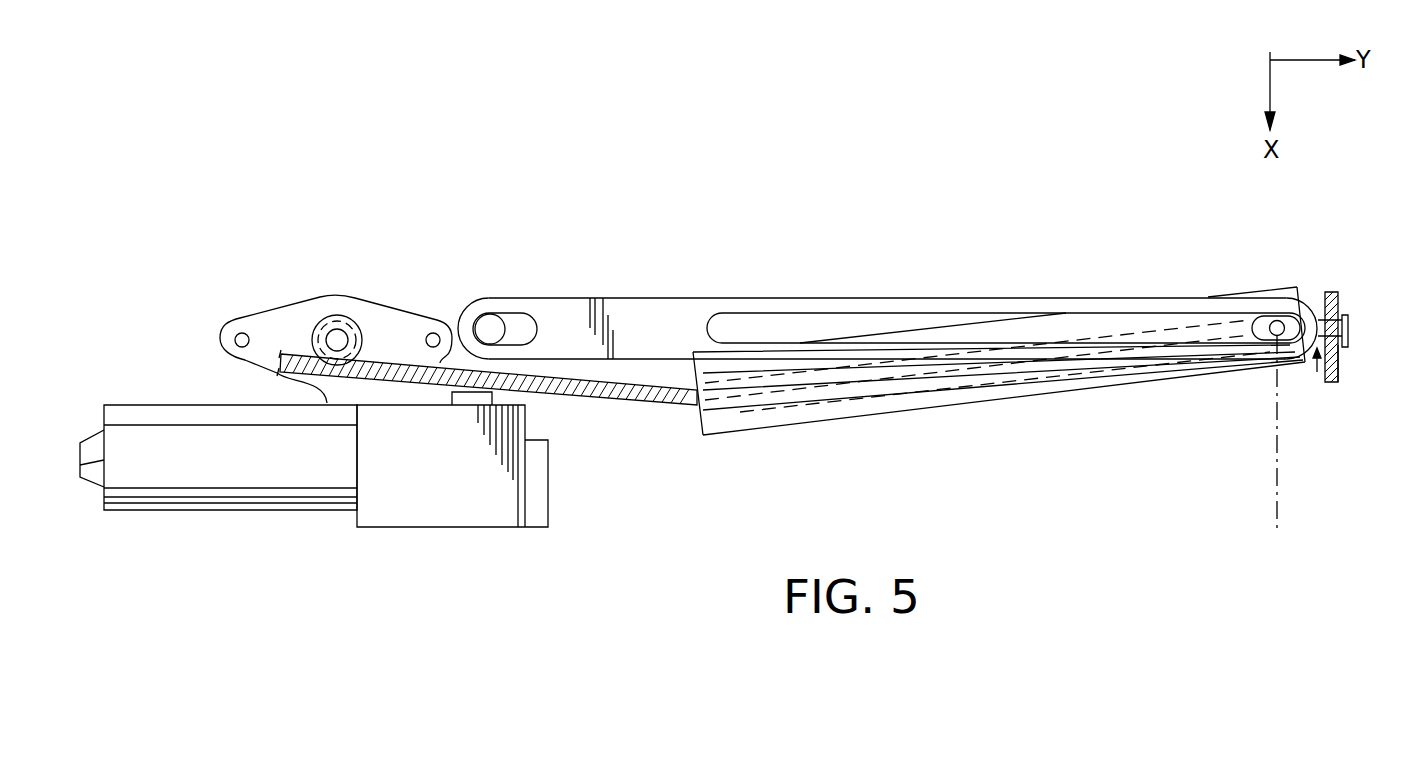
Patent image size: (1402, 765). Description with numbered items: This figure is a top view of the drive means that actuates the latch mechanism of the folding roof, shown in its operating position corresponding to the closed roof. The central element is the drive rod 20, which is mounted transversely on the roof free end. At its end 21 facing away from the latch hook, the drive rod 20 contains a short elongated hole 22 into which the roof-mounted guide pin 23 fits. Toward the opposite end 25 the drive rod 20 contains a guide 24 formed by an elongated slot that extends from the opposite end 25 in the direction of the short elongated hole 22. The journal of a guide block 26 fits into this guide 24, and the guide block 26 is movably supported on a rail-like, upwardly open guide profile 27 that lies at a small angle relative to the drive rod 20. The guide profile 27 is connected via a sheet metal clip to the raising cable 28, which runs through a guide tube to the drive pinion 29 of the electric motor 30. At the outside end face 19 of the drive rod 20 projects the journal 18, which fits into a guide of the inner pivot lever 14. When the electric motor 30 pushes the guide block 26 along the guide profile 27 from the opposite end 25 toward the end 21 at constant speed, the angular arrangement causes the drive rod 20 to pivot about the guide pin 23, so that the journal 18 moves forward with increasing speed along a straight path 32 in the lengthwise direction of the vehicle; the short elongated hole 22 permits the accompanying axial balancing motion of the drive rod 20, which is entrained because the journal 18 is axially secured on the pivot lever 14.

The inner pivot lever 14 is at (1341, 292).
The journal 18 is at (1340, 348).
The outside end face 19 is at (1311, 296).
The drive rod 20 is at (645, 323).
The end 21 is at (463, 310).
The short elongated hole 22 is at (520, 323).
The guide pin 23 is at (490, 328).
The guide 24 is at (793, 323).
The opposite end 25 is at (1317, 375).
The guide block 26 is at (1262, 320).
The guide profile 27 is at (873, 403).
The raising cable 28 is at (620, 404).
The drive pinion 29 is at (343, 323).
The electric motor 30 is at (237, 467).
The straight path 32 is at (1277, 499).